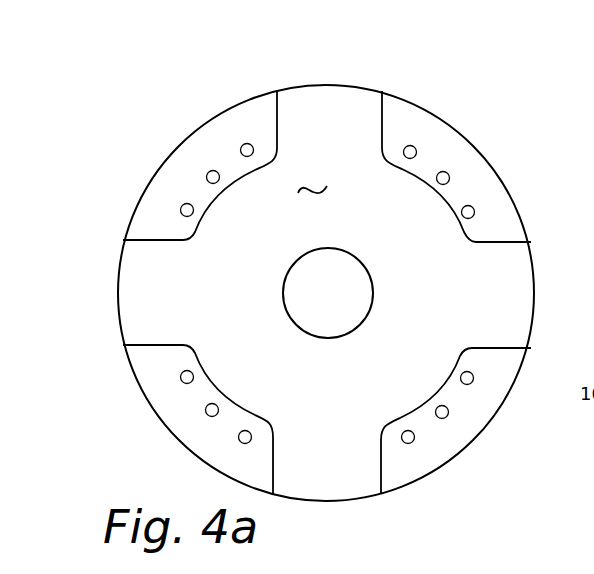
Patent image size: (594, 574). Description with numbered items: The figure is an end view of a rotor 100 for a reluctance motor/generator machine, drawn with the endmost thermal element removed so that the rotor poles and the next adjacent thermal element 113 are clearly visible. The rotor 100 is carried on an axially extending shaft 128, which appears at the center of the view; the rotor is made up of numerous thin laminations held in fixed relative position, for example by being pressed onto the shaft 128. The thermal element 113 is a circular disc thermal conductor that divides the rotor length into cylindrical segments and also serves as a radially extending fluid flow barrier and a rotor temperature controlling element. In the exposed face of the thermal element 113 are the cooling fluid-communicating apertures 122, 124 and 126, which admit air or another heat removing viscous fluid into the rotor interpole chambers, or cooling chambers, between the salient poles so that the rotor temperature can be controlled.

The rotor 100 is at (316, 183).
The thermal element 113 is at (234, 105).
The cooling fluid-communicating aperture 122 is at (475, 210).
The cooling fluid-communicating aperture 124 is at (449, 173).
The cooling fluid-communicating aperture 126 is at (414, 145).
The shaft 128 is at (362, 323).